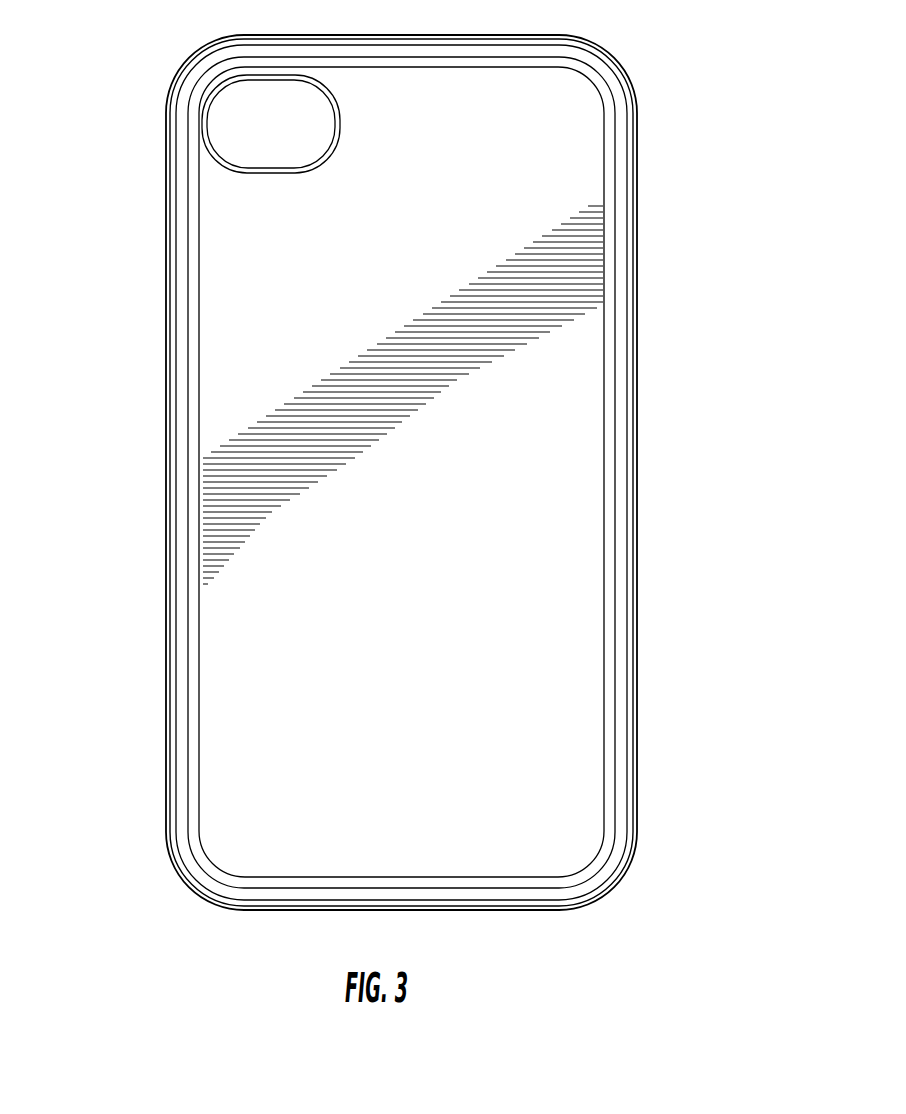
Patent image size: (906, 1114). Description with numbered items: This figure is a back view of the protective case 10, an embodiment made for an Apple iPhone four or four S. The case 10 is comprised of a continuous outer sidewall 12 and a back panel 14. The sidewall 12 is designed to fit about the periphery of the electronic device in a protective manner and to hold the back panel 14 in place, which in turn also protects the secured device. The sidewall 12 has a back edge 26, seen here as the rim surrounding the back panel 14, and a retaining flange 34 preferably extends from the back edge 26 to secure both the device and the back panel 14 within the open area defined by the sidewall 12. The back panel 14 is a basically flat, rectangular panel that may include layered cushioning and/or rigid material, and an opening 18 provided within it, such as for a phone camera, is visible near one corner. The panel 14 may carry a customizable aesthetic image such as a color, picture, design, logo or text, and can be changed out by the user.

The protective case 10 is at (407, 458).
The outer sidewall 12 is at (636, 430).
The back panel 14 is at (355, 308).
The camera opening 18 is at (232, 140).
The back edge 26 is at (178, 523).
The retaining flange 34 is at (197, 333).